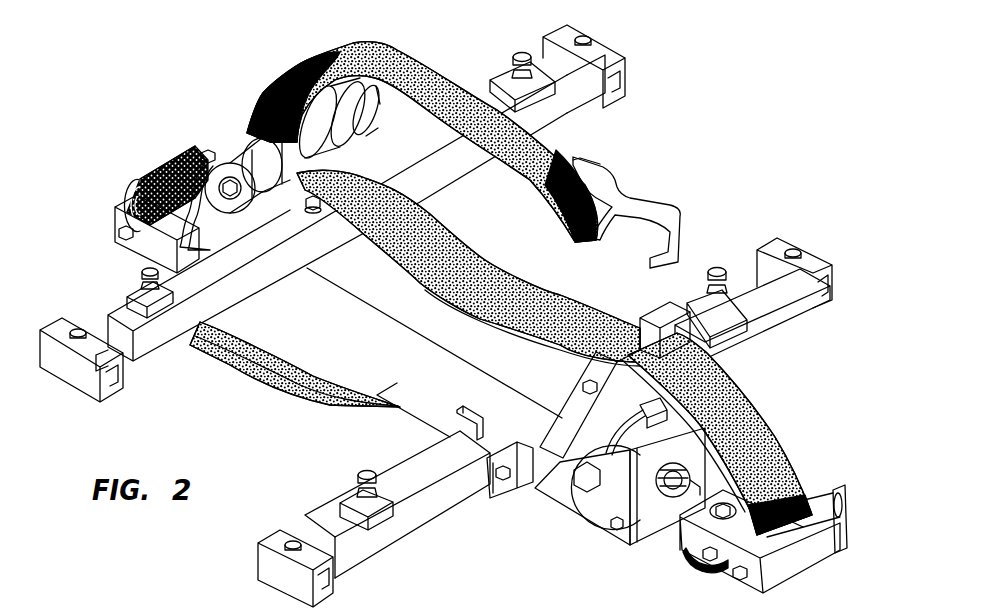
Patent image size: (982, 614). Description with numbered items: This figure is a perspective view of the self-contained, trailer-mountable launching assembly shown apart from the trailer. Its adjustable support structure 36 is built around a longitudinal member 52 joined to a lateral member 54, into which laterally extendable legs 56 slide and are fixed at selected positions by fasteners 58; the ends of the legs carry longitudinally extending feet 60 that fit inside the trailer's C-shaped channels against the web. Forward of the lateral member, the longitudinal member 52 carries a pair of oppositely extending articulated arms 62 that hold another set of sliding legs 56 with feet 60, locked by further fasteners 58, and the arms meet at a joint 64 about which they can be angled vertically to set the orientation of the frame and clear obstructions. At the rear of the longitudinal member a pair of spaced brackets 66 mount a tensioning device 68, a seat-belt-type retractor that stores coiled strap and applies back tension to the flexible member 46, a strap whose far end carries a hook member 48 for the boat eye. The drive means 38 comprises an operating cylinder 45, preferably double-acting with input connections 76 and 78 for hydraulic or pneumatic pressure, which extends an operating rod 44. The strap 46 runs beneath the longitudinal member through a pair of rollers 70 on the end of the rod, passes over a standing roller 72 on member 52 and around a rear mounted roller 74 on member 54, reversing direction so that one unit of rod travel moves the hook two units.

The adjustable support structure 36 is at (414, 154).
The drive means 38 is at (680, 444).
The operating rod 44 is at (640, 543).
The operating cylinder 45 is at (612, 525).
The flexible member 46 is at (152, 165).
The hook member 48 is at (680, 205).
The longitudinal member 52 is at (364, 408).
The lateral member 54 is at (260, 284).
The laterally extendable legs 56 is at (128, 362).
The fasteners 58 is at (141, 283).
The longitudinally extending feet 60 is at (75, 378).
The articulated arms 62 is at (413, 523).
The joint 64 is at (500, 490).
The brackets 66 is at (206, 152).
The tensioning device 68 is at (113, 232).
The rollers 70 is at (783, 553).
The standing roller 72 is at (643, 325).
The rear mounted roller 74 is at (306, 208).
The input connection 76 is at (204, 156).
The input connection 78 is at (645, 410).